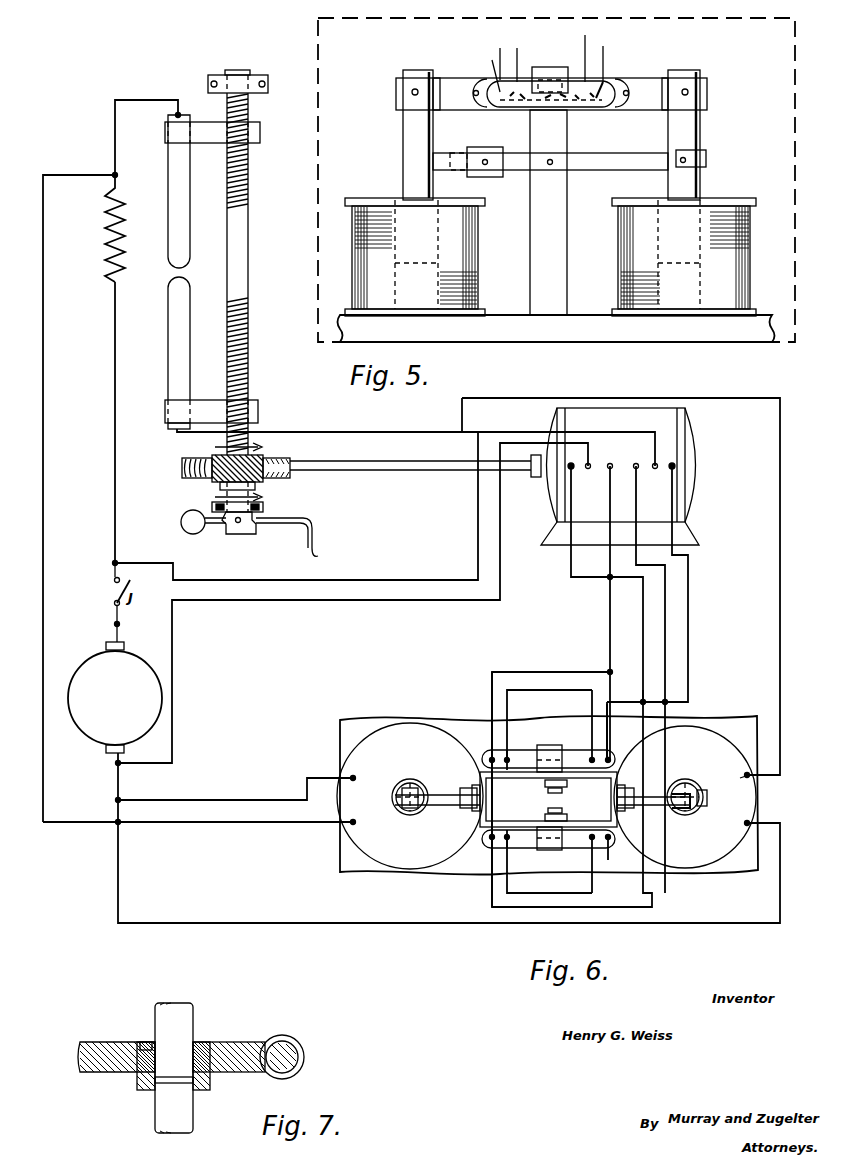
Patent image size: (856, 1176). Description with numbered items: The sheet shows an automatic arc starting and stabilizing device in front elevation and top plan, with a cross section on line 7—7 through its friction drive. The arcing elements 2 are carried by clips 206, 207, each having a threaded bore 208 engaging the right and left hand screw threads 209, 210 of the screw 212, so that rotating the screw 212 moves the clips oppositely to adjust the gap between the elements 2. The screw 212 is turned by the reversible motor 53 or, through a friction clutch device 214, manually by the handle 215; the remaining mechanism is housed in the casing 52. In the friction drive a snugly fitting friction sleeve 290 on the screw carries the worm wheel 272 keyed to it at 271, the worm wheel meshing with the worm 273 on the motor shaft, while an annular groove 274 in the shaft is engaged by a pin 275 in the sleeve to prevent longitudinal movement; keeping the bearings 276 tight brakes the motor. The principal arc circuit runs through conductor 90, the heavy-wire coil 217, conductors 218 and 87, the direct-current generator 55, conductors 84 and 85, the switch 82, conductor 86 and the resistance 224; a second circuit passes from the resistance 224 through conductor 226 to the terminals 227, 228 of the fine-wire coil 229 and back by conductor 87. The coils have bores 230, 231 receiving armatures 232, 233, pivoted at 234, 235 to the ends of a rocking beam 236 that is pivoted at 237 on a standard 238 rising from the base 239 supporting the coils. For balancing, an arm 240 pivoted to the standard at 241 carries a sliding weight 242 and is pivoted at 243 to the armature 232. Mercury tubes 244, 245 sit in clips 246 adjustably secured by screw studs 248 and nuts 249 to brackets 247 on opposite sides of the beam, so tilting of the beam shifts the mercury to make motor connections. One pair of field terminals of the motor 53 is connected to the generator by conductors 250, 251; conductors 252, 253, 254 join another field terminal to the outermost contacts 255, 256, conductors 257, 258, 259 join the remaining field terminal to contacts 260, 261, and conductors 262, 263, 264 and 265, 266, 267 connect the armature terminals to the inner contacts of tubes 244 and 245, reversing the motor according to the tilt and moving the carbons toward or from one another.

In FIG. 6, the arcing elements 2 is at (182, 257).
In FIG. 6, the section line 7 is at (226, 473).
In FIG. 5, the casing 52 is at (318, 215).
In FIG. 6, the reversible motor 53 is at (702, 498).
In FIG. 6, the direct-current generator 55 is at (92, 732).
In FIG. 6, the switch 82 is at (110, 588).
In FIG. 6, the conductor 84 is at (110, 630).
In FIG. 6, the conductor 85 is at (110, 613).
In FIG. 6, the conductor 86 is at (108, 450).
In FIG. 6, the conductor 87 is at (115, 778).
In FIG. 6, the conductor 90 is at (164, 100).
In FIG. 6, the clip 206 is at (212, 140).
In FIG. 6, the clip 207 is at (153, 278).
In FIG. 6, the threaded bore 208 is at (261, 134).
In FIG. 6, the right hand screw thread 209 is at (249, 200).
In FIG. 6, the left hand screw thread 210 is at (250, 327).
In FIG. 6, the screw 212 is at (240, 286).
In FIG. 7, the screw 212 is at (182, 1023).
In FIG. 6, the friction clutch device 214 is at (213, 478).
In FIG. 7, the friction clutch device 214 is at (137, 1083).
In FIG. 6, the handle 215 is at (320, 554).
In FIG. 5, the coil 217 is at (752, 225).
In FIG. 6, the coil 217 is at (757, 797).
In FIG. 6, the conductor 218 is at (742, 924).
In FIG. 6, the resistance 224 is at (107, 262).
In FIG. 6, the conductor 226 is at (79, 175).
In FIG. 6, the terminal 227 is at (345, 824).
In FIG. 6, the terminal 228 is at (345, 775).
In FIG. 5, the coil 229 is at (383, 212).
In FIG. 6, the coil 229 is at (413, 870).
In FIG. 6, the bore 230 is at (695, 815).
In FIG. 6, the bore 231 is at (413, 816).
In FIG. 5, the armature 232 is at (702, 183).
In FIG. 6, the armature 232 is at (702, 810).
In FIG. 5, the armature 233 is at (403, 160).
In FIG. 6, the armature 233 is at (405, 808).
In FIG. 5, the pivot 234 is at (688, 92).
In FIG. 6, the pivot 234 is at (727, 775).
In FIG. 5, the pivot 235 is at (412, 92).
In FIG. 6, the pivot 235 is at (415, 790).
In FIG. 5, the rocking beam 236 is at (460, 112).
In FIG. 6, the rocking beam 236 is at (535, 808).
In FIG. 5, the pivot 237 is at (535, 110).
In FIG. 6, the pivot 237 is at (553, 794).
In FIG. 5, the standard 238 is at (562, 195).
In FIG. 6, the standard 238 is at (565, 805).
In FIG. 5, the base 239 is at (508, 333).
In FIG. 6, the base 239 is at (445, 718).
In FIG. 5, the arm 240 is at (636, 160).
In FIG. 5, the pivot 241 is at (548, 165).
In FIG. 5, the sliding weight 242 is at (490, 178).
In FIG. 5, the pivot 243 is at (700, 157).
In FIG. 6, the closed tube 244 is at (515, 752).
In FIG. 6, the closed tube 245 is at (510, 848).
In FIG. 5, the clip 246 is at (560, 80).
In FIG. 6, the clip 246 is at (558, 748).
In FIG. 5, the bracket 247 is at (630, 85).
In FIG. 6, the bracket 247 is at (480, 783).
In FIG. 6, the screw stud 248 is at (548, 784).
In FIG. 6, the nut 249 is at (570, 790).
In FIG. 6, the conductor 250 is at (478, 547).
In FIG. 6, the conductor 251 is at (460, 603).
In FIG. 6, the conductor 252 is at (692, 575).
In FIG. 6, the conductor 253 is at (629, 707).
In FIG. 5, the conductor 254 is at (500, 48).
In FIG. 6, the conductor 254 is at (665, 728).
In FIG. 6, the outermost contact 255 is at (640, 748).
In FIG. 5, the outermost contact 256 is at (479, 74).
In FIG. 6, the outermost contact 256 is at (490, 848).
In FIG. 6, the conductor 257 is at (641, 612).
In FIG. 6, the conductor 258 is at (569, 672).
In FIG. 5, the conductor 259 is at (603, 48).
In FIG. 6, the conductor 259 is at (645, 704).
In FIG. 6, the contact 260 is at (490, 752).
In FIG. 5, the contact 261 is at (605, 75).
In FIG. 6, the contact 261 is at (625, 852).
In FIG. 6, the conductor 262 is at (608, 607).
In FIG. 6, the conductor 263 is at (605, 700).
In FIG. 6, the conductor 264 is at (509, 700).
In FIG. 6, the conductor 265 is at (668, 633).
In FIG. 5, the conductor 266 is at (585, 40).
In FIG. 6, the conductor 266 is at (592, 880).
In FIG. 5, the conductor 267 is at (517, 52).
In FIG. 6, the conductor 267 is at (508, 880).
In FIG. 7, the key 271 is at (141, 1044).
In FIG. 6, the worm wheel 272 is at (288, 478).
In FIG. 7, the worm wheel 272 is at (100, 1050).
In FIG. 6, the worm 273 is at (262, 488).
In FIG. 7, the worm 273 is at (305, 1047).
In FIG. 7, the annular groove 274 is at (168, 1084).
In FIG. 7, the pin 275 is at (210, 1080).
In FIG. 6, the bearings 276 is at (250, 75).
In FIG. 7, the friction sleeve 290 is at (210, 1047).